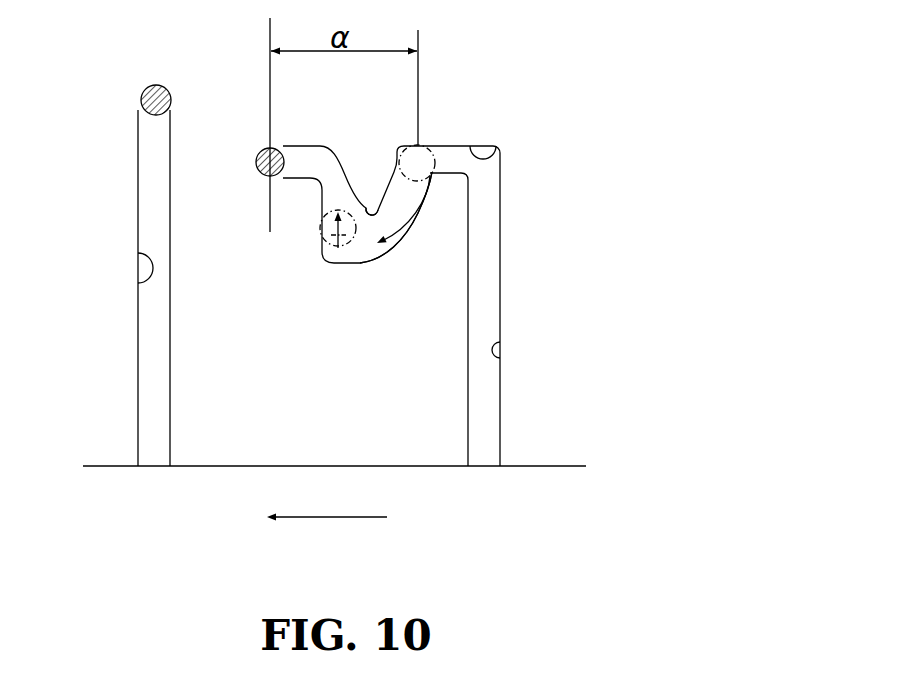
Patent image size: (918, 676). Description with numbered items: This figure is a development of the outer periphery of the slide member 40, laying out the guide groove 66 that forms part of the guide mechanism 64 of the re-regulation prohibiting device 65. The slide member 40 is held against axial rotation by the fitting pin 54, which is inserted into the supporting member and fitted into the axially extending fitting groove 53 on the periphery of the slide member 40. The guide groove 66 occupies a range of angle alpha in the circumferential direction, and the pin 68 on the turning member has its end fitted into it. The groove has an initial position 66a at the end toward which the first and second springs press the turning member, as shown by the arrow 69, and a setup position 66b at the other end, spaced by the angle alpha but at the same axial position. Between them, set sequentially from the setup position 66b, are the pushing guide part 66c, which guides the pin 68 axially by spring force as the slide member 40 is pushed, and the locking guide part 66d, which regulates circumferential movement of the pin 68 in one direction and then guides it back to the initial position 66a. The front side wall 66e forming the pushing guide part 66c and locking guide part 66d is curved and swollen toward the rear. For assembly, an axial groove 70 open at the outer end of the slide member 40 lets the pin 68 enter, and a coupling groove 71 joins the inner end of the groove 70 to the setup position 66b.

The slide member 40 is at (232, 450).
The fitting groove 53 is at (140, 280).
The fitting pin 54 is at (143, 103).
The guide mechanism 64 is at (338, 275).
The re-regulation prohibiting device 65 is at (242, 151).
The guide groove 66 is at (370, 260).
The initial position 66a is at (262, 176).
The setup position 66b is at (424, 153).
The pushing guide part 66c is at (413, 233).
The locking guide part 66d is at (322, 223).
The front side wall 66e is at (363, 200).
The pin 68 is at (268, 226).
The direction pressed by the springs 69 is at (310, 517).
The groove 70 is at (502, 357).
The coupling groove 71 is at (500, 157).